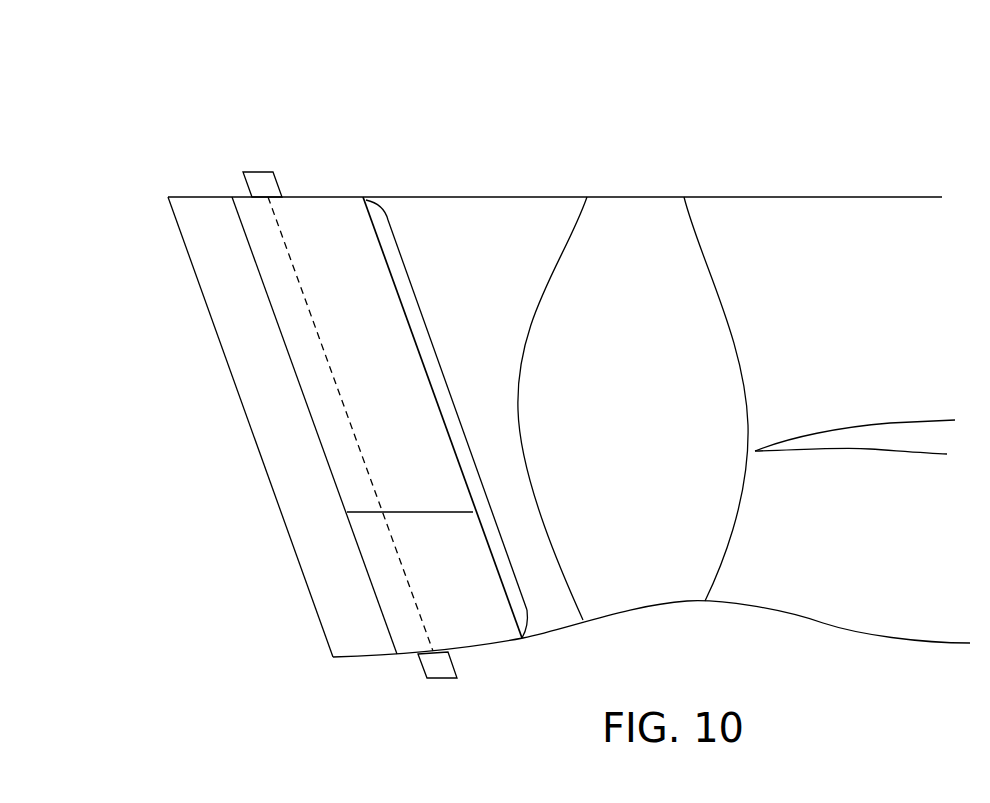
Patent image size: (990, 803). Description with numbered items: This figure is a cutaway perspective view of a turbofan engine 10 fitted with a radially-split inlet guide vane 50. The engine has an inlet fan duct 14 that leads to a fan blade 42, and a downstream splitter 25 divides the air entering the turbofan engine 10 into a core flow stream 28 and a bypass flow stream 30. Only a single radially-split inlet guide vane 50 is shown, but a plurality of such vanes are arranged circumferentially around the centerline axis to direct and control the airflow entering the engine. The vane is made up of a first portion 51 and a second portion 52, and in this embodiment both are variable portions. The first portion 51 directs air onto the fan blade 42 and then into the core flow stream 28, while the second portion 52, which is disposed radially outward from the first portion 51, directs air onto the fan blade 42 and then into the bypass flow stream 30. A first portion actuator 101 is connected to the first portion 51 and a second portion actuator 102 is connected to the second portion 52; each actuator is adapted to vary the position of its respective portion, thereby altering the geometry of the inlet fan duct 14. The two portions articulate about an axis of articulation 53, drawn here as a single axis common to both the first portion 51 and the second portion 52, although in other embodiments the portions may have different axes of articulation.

The turbofan engine 10 is at (693, 125).
The inlet fan duct 14 is at (358, 78).
The downstream splitter 25 is at (855, 432).
The core flow stream 28 is at (819, 551).
The bypass flow stream 30 is at (860, 284).
The fan blade 42 is at (640, 403).
The radially-split inlet guide vane 50 is at (437, 362).
The first portion 51 is at (493, 640).
The second portion 52 is at (338, 197).
The axis of articulation 53 is at (297, 278).
The first portion actuator 101 is at (433, 676).
The second portion actuator 102 is at (257, 171).